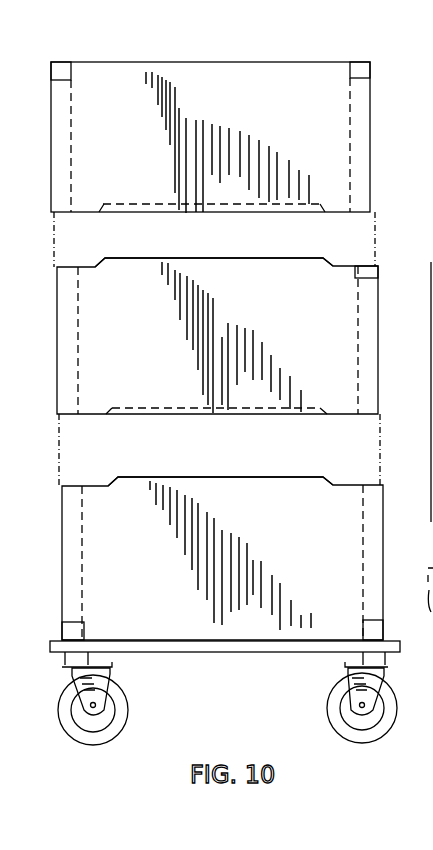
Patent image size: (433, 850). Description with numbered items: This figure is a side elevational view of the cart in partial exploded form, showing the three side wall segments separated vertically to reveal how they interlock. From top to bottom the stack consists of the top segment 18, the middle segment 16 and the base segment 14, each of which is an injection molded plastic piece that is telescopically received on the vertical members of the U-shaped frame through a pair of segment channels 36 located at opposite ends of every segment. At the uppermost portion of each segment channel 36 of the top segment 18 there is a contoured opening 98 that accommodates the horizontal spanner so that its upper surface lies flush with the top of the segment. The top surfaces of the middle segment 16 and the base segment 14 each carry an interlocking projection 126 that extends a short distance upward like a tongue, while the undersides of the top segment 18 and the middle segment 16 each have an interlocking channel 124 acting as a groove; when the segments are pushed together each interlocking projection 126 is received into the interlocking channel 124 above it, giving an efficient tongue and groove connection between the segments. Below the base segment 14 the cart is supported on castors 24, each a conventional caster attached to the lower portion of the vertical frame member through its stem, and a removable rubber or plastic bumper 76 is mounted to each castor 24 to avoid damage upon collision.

The base segment 14 is at (383, 517).
The middle segment 16 is at (378, 350).
The top segment 18 is at (372, 135).
The castor 24 is at (128, 702).
The segment channel 36 is at (67, 150).
The bumper 76 is at (102, 651).
The contoured opening 98 is at (62, 63).
The interlocking channel 124 is at (138, 208).
The interlocking projection 126 is at (290, 258).